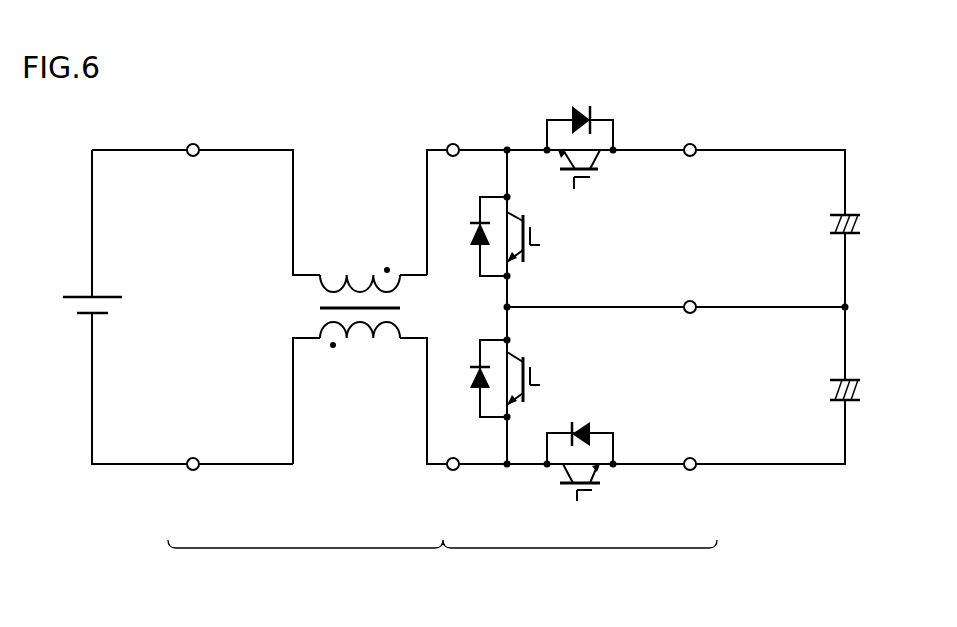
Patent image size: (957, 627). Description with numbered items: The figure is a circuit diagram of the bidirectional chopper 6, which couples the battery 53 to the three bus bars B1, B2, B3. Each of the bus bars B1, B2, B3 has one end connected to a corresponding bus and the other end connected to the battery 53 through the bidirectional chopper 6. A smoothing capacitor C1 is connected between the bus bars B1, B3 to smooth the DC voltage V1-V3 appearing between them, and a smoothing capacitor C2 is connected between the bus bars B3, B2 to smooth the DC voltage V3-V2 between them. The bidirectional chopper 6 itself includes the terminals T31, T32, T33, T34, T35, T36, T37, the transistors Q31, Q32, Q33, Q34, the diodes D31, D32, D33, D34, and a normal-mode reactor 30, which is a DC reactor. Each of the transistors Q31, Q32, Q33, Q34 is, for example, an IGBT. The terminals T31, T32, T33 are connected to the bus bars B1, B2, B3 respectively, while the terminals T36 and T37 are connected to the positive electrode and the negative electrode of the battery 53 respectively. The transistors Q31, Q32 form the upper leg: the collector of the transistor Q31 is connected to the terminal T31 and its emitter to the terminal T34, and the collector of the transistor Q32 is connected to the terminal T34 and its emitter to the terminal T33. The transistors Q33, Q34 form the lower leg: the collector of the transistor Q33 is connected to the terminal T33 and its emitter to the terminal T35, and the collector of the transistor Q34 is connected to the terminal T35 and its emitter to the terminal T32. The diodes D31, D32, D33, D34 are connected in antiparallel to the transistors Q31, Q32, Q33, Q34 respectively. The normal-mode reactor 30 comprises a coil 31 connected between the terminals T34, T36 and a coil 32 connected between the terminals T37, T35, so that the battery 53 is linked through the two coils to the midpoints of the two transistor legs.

The battery 53 is at (82, 296).
The normal-mode reactor 30 is at (246, 272).
The coil 31 is at (320, 293).
The coil 32 is at (320, 322).
The terminal T36 is at (193, 144).
The terminal T37 is at (193, 470).
The terminal T34 is at (453, 144).
The terminal T35 is at (453, 470).
The terminal T31 is at (690, 144).
The terminal T32 is at (690, 470).
The terminal T33 is at (690, 313).
The diode D31 is at (575, 106).
The diode D32 is at (474, 233).
The diode D33 is at (474, 388).
The diode D34 is at (576, 424).
The transistor Q31 is at (580, 180).
The transistor Q32 is at (540, 245).
The transistor Q33 is at (540, 384).
The transistor Q34 is at (580, 495).
The bus bar B1 is at (764, 148).
The bus bar B2 is at (763, 470).
The bus bar B3 is at (763, 312).
The DC voltage V1 is at (846, 143).
The DC voltage V2 is at (846, 475).
The DC voltage V3 is at (862, 311).
The smoothing capacitor C1 is at (856, 214).
The smoothing capacitor C2 is at (856, 380).
The bidirectional chopper 6 is at (442, 561).